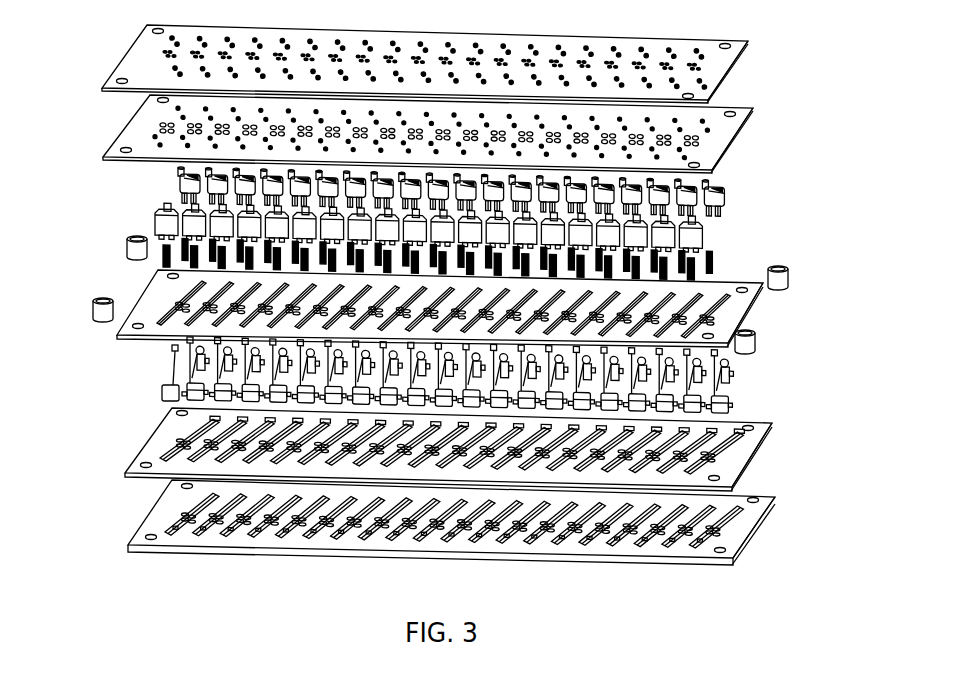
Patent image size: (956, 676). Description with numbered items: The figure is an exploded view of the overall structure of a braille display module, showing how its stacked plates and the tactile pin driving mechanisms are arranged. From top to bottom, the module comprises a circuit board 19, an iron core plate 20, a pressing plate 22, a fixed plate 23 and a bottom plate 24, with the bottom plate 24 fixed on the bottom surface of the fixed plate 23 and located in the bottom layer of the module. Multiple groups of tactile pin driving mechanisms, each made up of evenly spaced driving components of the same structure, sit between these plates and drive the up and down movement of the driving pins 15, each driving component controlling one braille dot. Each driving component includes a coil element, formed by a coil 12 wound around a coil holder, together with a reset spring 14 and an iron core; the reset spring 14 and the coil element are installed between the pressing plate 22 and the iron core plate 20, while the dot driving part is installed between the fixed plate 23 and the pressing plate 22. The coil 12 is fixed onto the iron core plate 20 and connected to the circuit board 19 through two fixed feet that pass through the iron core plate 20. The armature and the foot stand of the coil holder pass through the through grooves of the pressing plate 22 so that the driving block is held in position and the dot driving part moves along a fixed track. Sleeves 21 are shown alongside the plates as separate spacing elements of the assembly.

The circuit board 19 is at (723, 57).
The iron core plate 20 is at (723, 133).
The coil 12 is at (717, 198).
The reset spring 14 is at (710, 260).
The sleeve 21 is at (130, 250).
The pressing plate 22 is at (723, 317).
The driving pin 15 is at (730, 375).
The fixed plate 23 is at (723, 462).
The bottom plate 24 is at (722, 538).